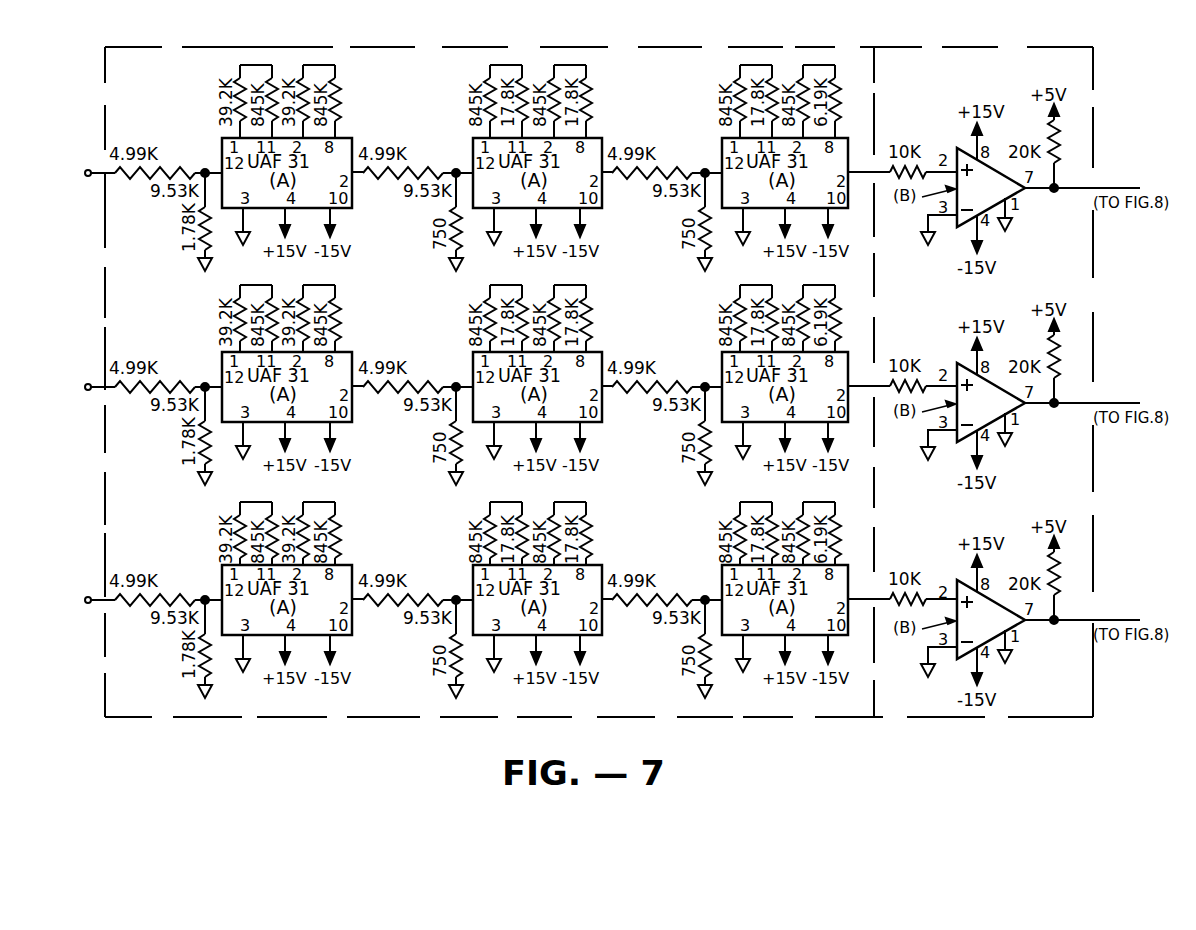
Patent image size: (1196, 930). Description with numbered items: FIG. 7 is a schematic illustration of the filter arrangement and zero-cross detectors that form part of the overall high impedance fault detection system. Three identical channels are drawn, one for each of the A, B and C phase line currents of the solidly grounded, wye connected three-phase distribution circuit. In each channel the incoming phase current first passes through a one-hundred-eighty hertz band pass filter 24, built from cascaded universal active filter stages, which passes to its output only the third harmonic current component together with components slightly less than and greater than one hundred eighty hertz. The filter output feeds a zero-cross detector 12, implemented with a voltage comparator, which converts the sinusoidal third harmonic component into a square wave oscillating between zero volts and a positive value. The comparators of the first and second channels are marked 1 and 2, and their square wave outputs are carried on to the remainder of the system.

The zero-cross detector 12 is at (1094, 112).
The 180 Hz band pass filter 24 is at (212, 720).
The output comparator amplifier (phase C) 1 is at (1031, 181).
The output comparator amplifier (phase B) 2 is at (1031, 396).